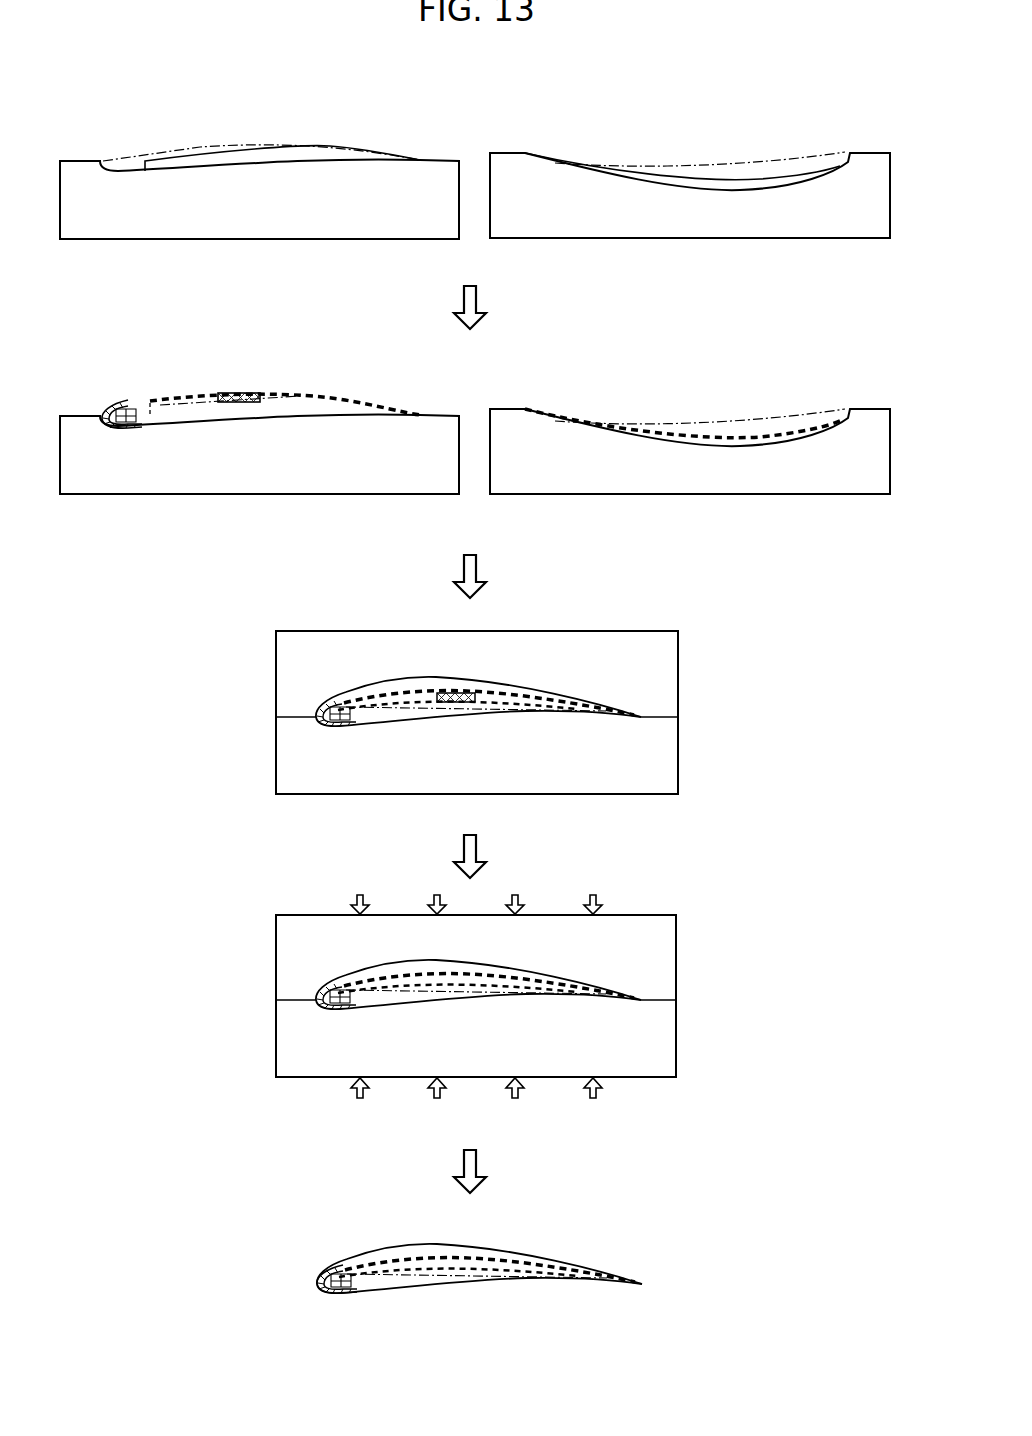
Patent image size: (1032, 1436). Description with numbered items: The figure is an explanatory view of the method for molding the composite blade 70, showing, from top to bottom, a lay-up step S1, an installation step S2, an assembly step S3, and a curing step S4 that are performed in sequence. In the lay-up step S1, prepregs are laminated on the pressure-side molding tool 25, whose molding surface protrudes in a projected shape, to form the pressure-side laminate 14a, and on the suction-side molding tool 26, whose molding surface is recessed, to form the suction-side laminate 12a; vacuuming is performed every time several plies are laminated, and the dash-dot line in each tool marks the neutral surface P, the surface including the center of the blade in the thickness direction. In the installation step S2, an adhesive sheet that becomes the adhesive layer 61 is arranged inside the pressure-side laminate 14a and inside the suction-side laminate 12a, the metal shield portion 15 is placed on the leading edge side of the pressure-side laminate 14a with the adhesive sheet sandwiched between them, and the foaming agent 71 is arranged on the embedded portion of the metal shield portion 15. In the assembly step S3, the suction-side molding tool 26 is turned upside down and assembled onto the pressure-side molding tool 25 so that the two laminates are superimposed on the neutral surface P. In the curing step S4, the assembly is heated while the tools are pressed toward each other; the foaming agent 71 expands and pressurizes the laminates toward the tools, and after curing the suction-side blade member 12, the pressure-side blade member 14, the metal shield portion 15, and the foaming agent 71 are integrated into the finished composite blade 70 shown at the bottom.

The suction-side blade member 12 is at (479, 1237).
The suction-side laminate 12a is at (783, 177).
The pressure-side blade member 14 is at (479, 1318).
The pressure-side laminate 14a is at (234, 155).
The metal shield portion 15 is at (130, 401).
The pressure-side molding tool 25 is at (258, 241).
The suction-side molding tool 26 is at (690, 241).
The adhesive layer 61 is at (342, 400).
The composite blade 70 is at (632, 1248).
The foaming agent 71 is at (240, 393).
The neutral surface P is at (131, 148).
The lay-up step S1 is at (848, 126).
The installation step S2 is at (848, 381).
The assembly step S3 is at (660, 620).
The curing step S4 is at (660, 897).